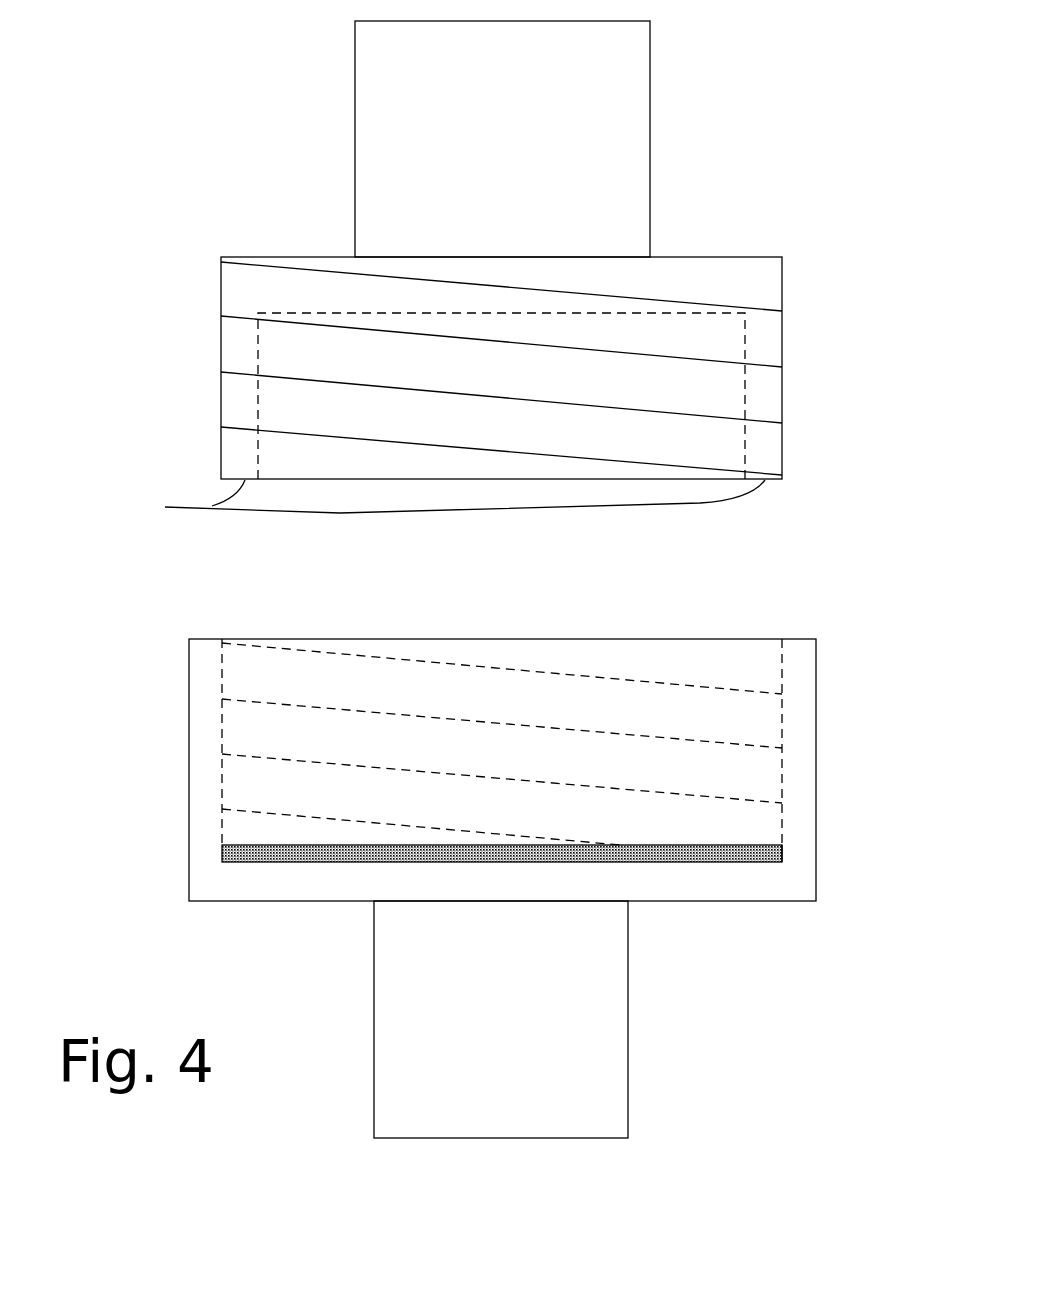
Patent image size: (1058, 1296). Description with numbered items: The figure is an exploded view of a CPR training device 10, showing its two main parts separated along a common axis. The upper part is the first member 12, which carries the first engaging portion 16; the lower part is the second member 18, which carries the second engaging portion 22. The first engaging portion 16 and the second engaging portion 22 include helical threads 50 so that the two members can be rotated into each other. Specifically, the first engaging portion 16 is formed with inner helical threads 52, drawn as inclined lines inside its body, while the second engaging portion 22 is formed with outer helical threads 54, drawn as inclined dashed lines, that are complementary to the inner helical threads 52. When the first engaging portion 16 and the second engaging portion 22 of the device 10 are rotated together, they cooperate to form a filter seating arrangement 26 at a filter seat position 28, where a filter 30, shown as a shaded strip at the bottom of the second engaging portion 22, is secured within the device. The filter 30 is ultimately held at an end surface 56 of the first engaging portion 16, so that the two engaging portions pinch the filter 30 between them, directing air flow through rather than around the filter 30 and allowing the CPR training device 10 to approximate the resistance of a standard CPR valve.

The CPR training device 10 is at (890, 100).
The first member 12 is at (852, 217).
The first engaging portion 16 is at (775, 386).
The second member 18 is at (855, 755).
The second engaging portion 22 is at (795, 813).
The filter seating arrangement 26 is at (216, 815).
The filter seat position 28 is at (225, 853).
The filter 30 is at (782, 850).
The helical threads 50 is at (757, 628).
The inner helical threads 52 is at (710, 362).
The outer helical threads 54 is at (740, 748).
The end surface 56 is at (435, 507).